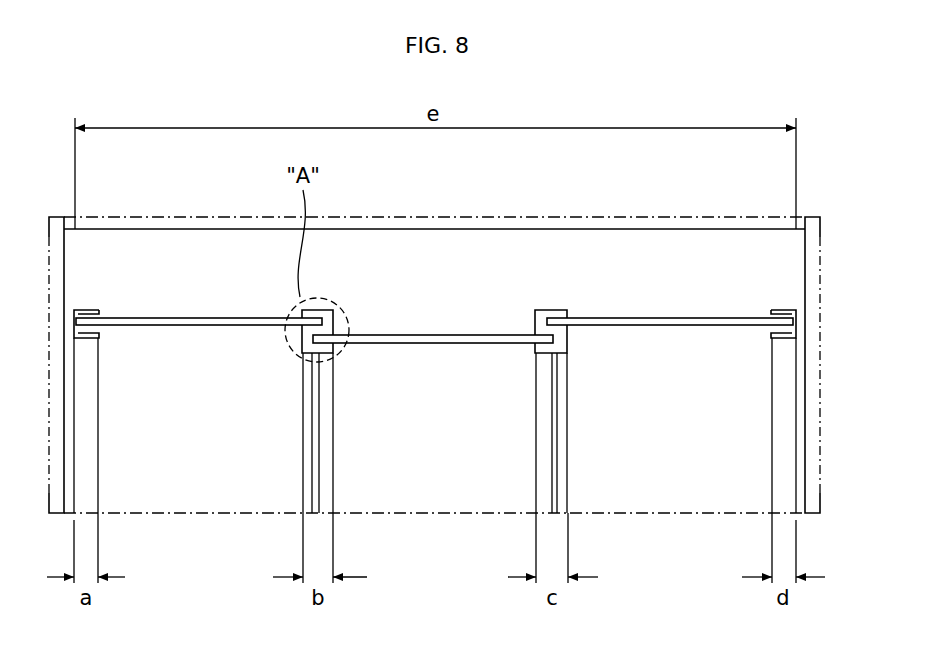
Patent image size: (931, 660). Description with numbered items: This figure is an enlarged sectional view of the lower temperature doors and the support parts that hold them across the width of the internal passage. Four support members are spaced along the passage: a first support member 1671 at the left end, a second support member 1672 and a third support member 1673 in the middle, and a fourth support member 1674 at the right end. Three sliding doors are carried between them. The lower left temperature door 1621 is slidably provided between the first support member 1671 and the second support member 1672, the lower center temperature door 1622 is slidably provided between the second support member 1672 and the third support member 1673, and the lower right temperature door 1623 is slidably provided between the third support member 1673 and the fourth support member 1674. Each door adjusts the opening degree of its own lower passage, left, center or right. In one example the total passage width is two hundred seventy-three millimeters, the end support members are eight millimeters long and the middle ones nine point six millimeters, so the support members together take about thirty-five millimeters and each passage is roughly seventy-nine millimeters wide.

The lower left temperature door 1621 is at (203, 326).
The lower center temperature door 1622 is at (436, 344).
The lower right temperature door 1623 is at (662, 326).
The first support member 1671 is at (86, 309).
The second support member 1672 is at (326, 298).
The third support member 1673 is at (546, 309).
The fourth support member 1674 is at (783, 309).